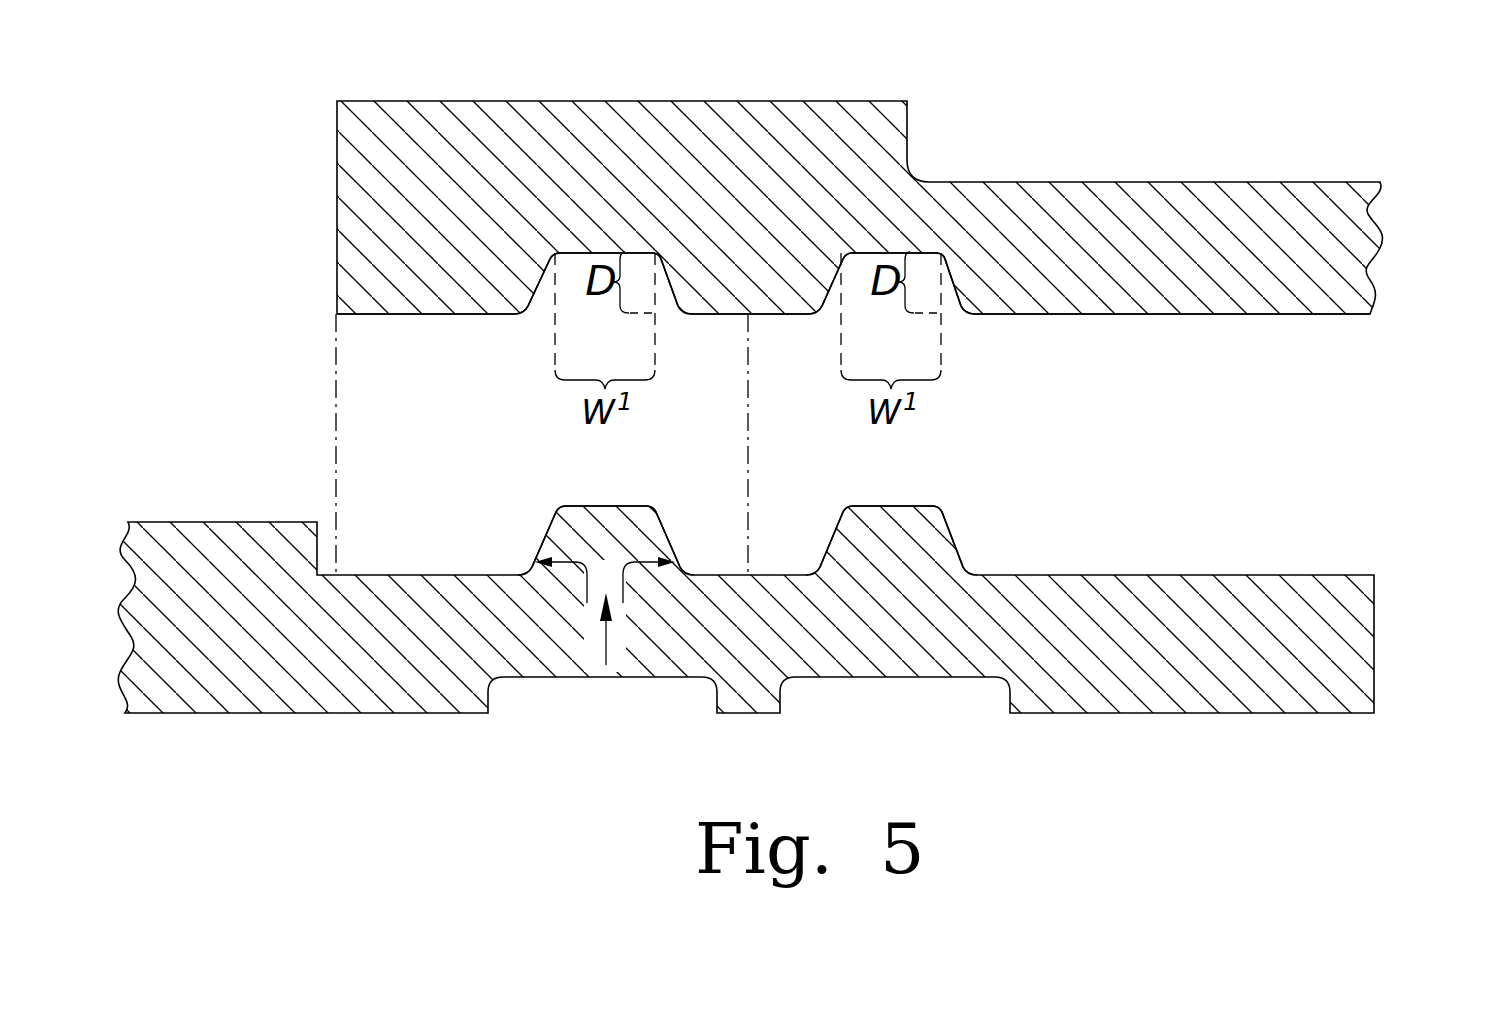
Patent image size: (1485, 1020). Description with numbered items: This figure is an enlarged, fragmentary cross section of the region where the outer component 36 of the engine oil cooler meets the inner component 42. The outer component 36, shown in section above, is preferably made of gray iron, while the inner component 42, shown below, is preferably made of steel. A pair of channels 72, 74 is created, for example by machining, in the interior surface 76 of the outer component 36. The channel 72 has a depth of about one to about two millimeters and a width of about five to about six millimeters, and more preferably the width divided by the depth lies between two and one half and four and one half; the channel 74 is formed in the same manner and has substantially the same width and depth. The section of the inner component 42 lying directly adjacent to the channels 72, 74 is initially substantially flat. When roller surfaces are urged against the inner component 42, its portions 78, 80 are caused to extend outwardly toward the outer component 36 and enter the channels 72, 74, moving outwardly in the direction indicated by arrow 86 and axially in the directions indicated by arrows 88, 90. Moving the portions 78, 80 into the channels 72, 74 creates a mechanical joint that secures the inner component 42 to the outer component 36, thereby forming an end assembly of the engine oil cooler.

The outer component 36 is at (1258, 195).
The inner component 42 is at (1348, 585).
The channel 72 is at (670, 300).
The channel 74 is at (957, 300).
The interior surface 76 is at (1365, 312).
The portion 78 is at (528, 524).
The portion 80 is at (970, 524).
The arrow 86 is at (605, 645).
The arrow 88 is at (587, 587).
The arrow 90 is at (623, 587).